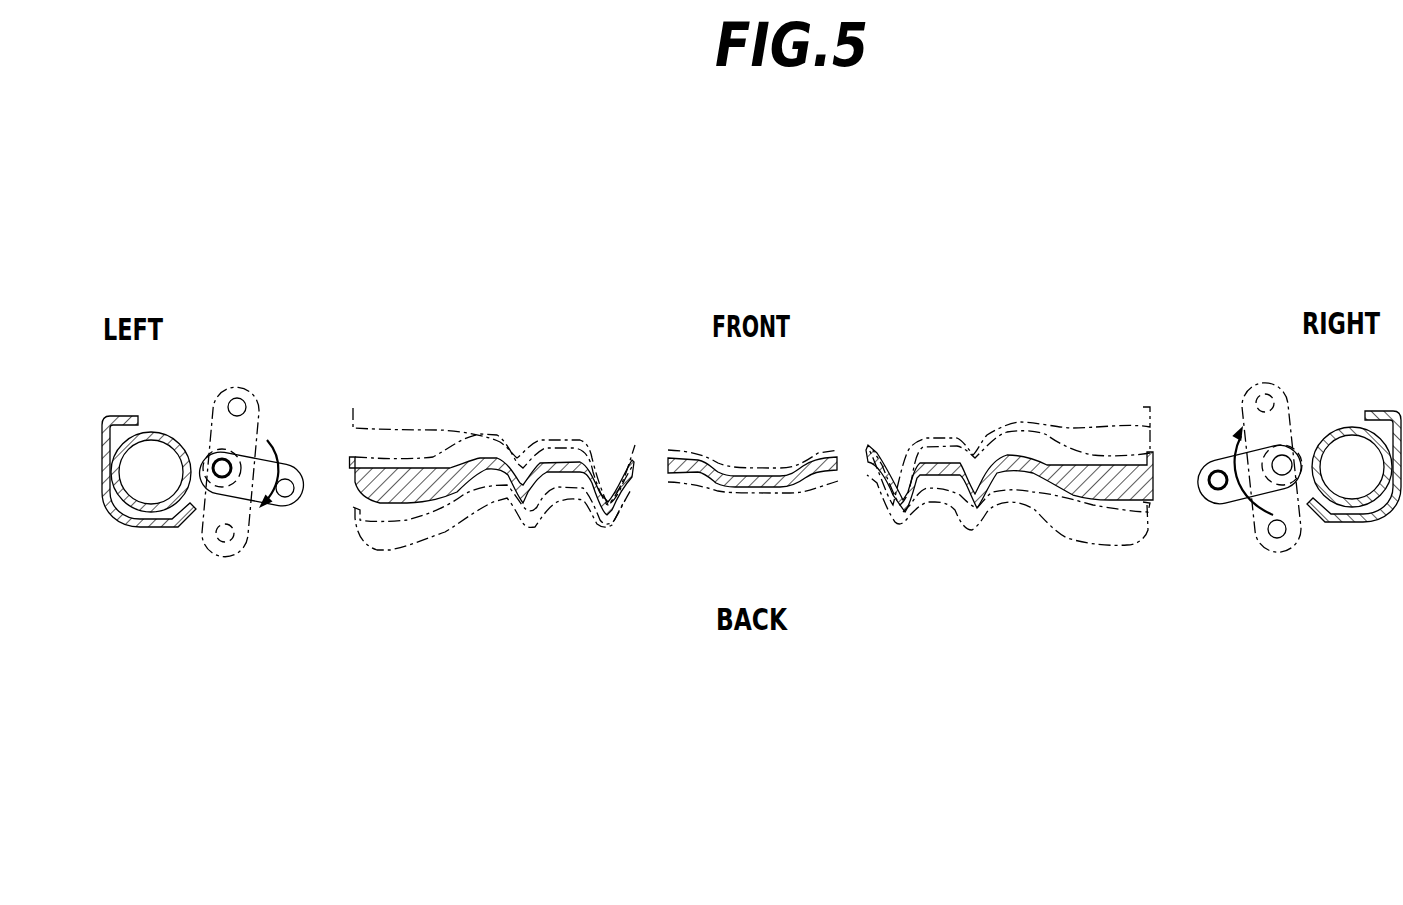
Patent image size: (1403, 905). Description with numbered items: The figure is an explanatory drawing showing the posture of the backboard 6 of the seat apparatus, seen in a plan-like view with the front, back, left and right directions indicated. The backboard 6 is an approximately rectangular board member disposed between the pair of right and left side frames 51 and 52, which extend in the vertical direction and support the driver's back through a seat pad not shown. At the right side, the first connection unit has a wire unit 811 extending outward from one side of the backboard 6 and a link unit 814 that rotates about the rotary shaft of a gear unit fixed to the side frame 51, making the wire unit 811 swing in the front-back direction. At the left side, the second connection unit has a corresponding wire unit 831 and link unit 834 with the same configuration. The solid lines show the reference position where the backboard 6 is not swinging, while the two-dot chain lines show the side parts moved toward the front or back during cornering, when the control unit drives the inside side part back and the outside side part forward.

The backboard 6 is at (634, 442).
The side frame 51 is at (1341, 428).
The side frame 52 is at (163, 428).
The wire unit 811 is at (1268, 530).
The link unit 814 is at (1210, 468).
The wire unit 831 is at (352, 430).
The link unit 834 is at (285, 507).